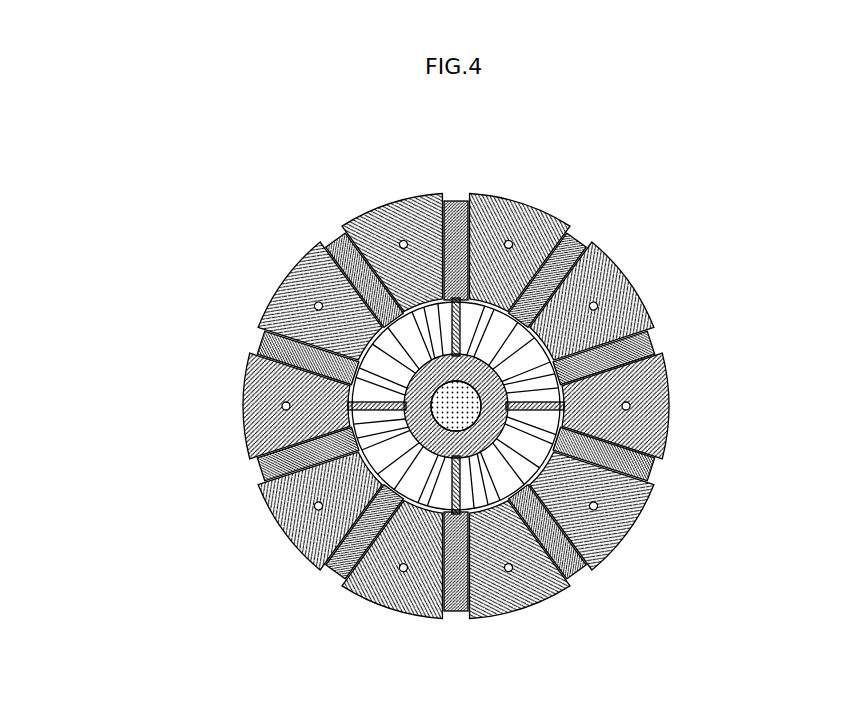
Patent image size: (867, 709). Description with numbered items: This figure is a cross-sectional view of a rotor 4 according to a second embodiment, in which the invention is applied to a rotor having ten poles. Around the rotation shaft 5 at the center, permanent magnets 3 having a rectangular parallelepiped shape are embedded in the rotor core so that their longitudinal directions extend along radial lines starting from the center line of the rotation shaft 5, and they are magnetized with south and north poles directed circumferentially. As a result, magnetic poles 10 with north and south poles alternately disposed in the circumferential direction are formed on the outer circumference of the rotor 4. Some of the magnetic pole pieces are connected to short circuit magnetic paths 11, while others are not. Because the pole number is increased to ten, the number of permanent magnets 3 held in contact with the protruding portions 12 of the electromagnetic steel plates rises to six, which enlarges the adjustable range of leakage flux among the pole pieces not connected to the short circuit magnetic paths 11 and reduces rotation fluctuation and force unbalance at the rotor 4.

The rotor 4 is at (92, 128).
The permanent magnet 3 is at (578, 572).
The rotation shaft 5 is at (650, 343).
The magnetic pole 10 is at (636, 290).
The short circuit magnetic path 11 is at (343, 242).
The protruding portion 12 is at (267, 343).